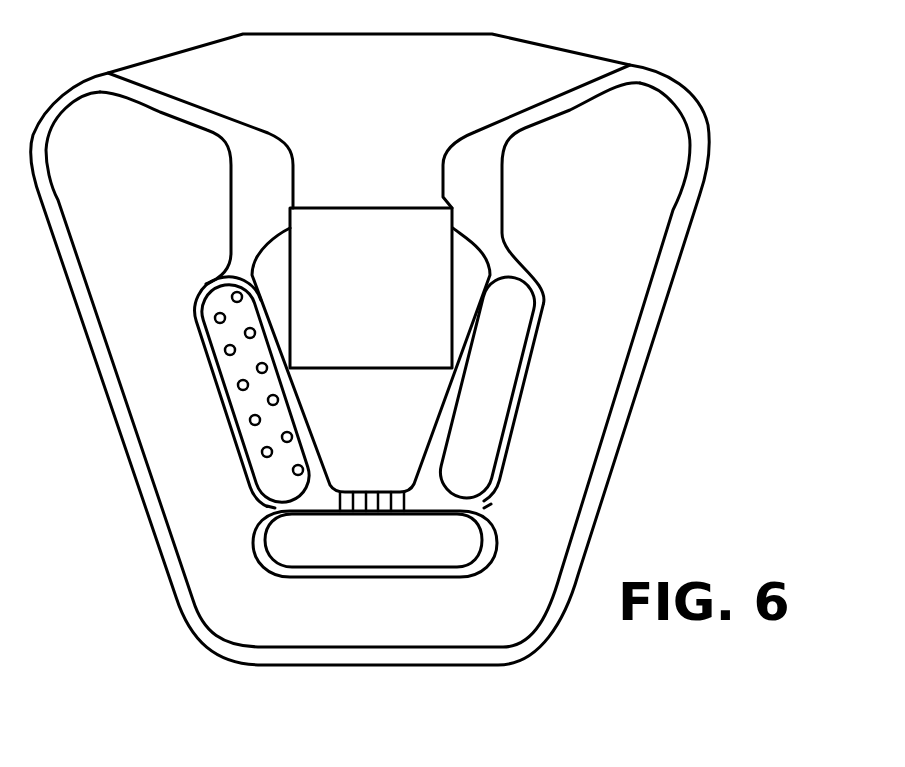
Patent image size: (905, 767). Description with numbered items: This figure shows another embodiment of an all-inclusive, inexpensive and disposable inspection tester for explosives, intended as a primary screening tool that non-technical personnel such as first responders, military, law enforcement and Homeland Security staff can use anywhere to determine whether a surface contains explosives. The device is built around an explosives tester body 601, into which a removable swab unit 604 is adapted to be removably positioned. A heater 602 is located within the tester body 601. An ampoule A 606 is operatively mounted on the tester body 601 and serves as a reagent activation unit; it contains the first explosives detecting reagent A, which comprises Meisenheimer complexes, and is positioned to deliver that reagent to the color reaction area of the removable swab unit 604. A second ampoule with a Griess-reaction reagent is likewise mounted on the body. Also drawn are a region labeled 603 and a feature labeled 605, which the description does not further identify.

The explosives tester body 601 is at (628, 33).
The heater 602 is at (393, 284).
The body 603 is at (388, 100).
The removable swab unit 604 is at (213, 294).
The right slot 605 is at (525, 296).
The ampoule A 606 is at (238, 385).